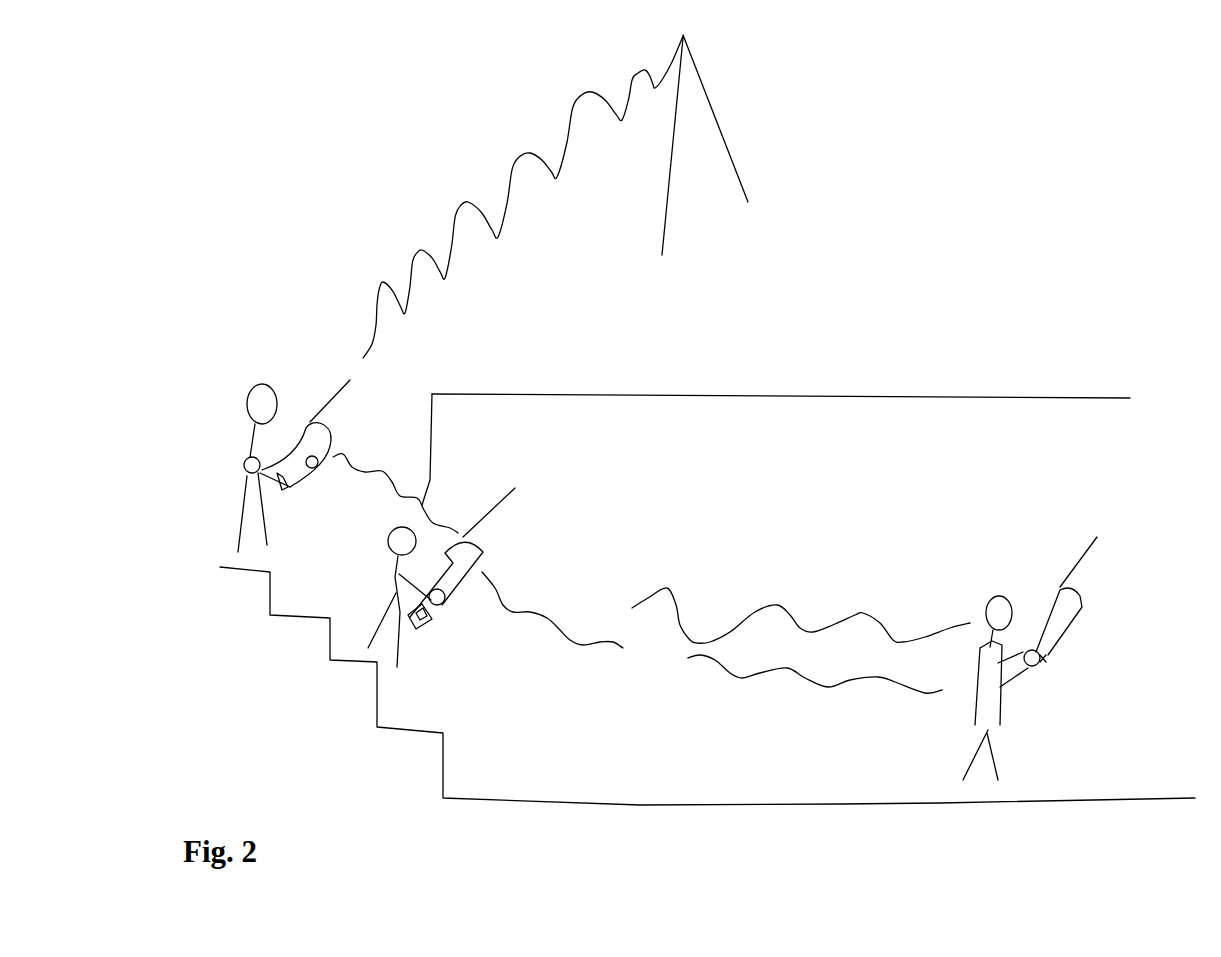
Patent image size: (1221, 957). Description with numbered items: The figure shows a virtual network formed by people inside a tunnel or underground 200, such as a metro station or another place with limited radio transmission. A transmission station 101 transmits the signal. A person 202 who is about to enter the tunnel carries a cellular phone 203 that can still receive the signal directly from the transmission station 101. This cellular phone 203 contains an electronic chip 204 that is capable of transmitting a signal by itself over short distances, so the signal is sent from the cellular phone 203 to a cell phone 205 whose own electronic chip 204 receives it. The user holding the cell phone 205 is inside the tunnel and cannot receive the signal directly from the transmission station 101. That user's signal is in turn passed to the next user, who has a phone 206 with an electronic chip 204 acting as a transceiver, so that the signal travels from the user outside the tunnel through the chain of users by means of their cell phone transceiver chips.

The transmission station 101 is at (713, 78).
The tunnel or underground 200 is at (845, 392).
The person 202 is at (238, 438).
The cellular phone 203 is at (325, 472).
The electronic chip 204 is at (280, 497).
The cell phone 205 is at (476, 555).
The phone 206 is at (1082, 605).